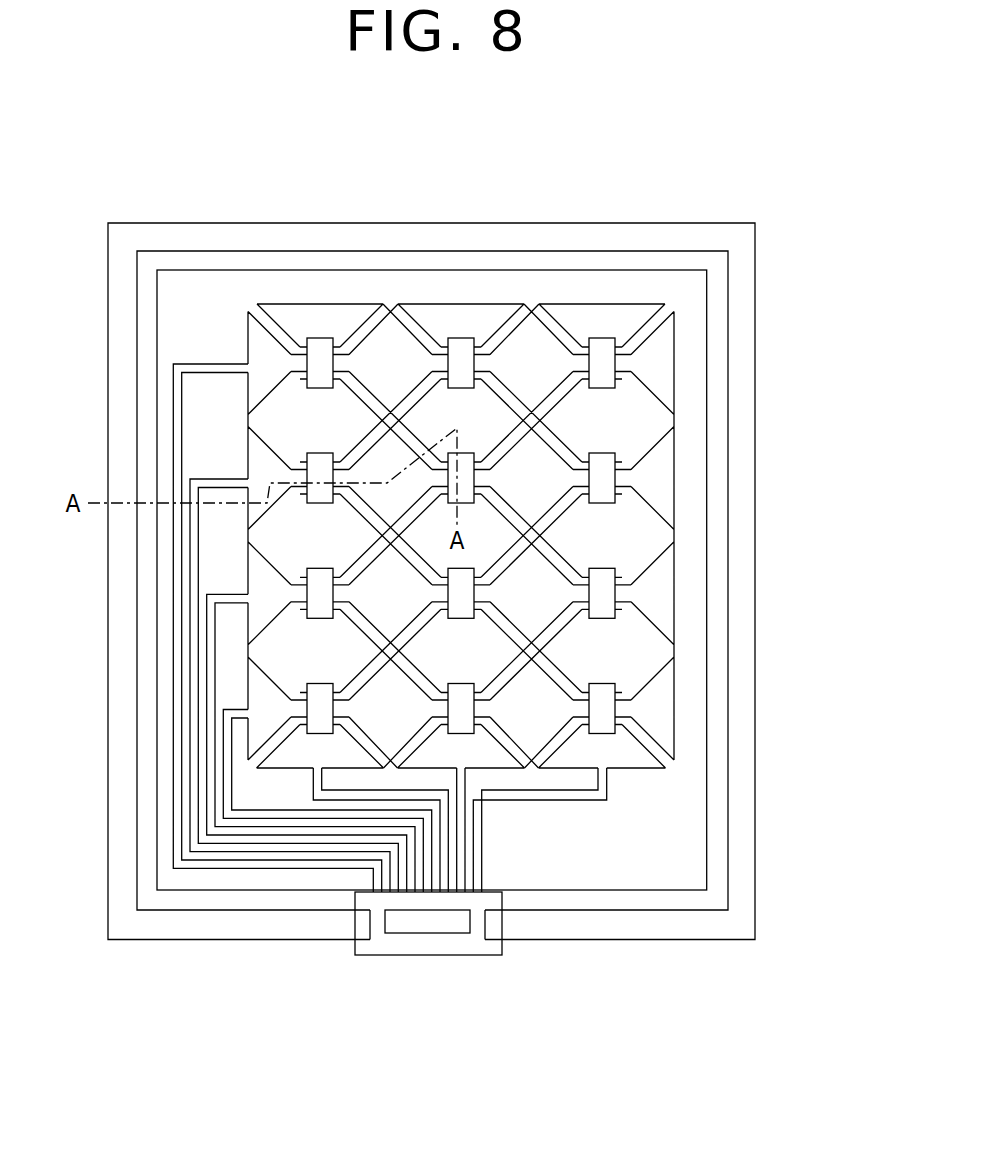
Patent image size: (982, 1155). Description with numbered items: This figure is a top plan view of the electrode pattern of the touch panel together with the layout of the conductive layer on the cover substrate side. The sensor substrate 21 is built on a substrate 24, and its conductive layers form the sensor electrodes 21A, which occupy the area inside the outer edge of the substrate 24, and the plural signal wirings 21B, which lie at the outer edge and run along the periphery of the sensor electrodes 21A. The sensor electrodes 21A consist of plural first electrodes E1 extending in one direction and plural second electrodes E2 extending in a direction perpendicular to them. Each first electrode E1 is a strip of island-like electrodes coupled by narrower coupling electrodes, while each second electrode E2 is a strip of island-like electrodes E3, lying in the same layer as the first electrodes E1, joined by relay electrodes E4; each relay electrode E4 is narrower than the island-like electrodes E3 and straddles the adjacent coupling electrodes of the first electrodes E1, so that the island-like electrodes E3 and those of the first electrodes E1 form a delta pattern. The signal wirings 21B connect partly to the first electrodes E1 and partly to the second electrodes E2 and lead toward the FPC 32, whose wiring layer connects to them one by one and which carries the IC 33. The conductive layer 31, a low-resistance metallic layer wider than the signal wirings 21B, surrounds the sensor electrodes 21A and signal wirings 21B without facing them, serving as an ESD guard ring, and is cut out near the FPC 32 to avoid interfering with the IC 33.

The sensor substrate 21 is at (716, 307).
The sensor electrodes 21A is at (718, 120).
The signal wirings 21B is at (227, 760).
The substrate 24 is at (693, 743).
The conductive layer 31 is at (752, 414).
The FPC 32 is at (462, 902).
The IC 33 is at (400, 924).
The first electrodes E1 is at (656, 342).
The second electrodes E2 is at (305, 165).
The island-like electrodes E3 is at (340, 330).
The relay electrodes E4 is at (318, 349).